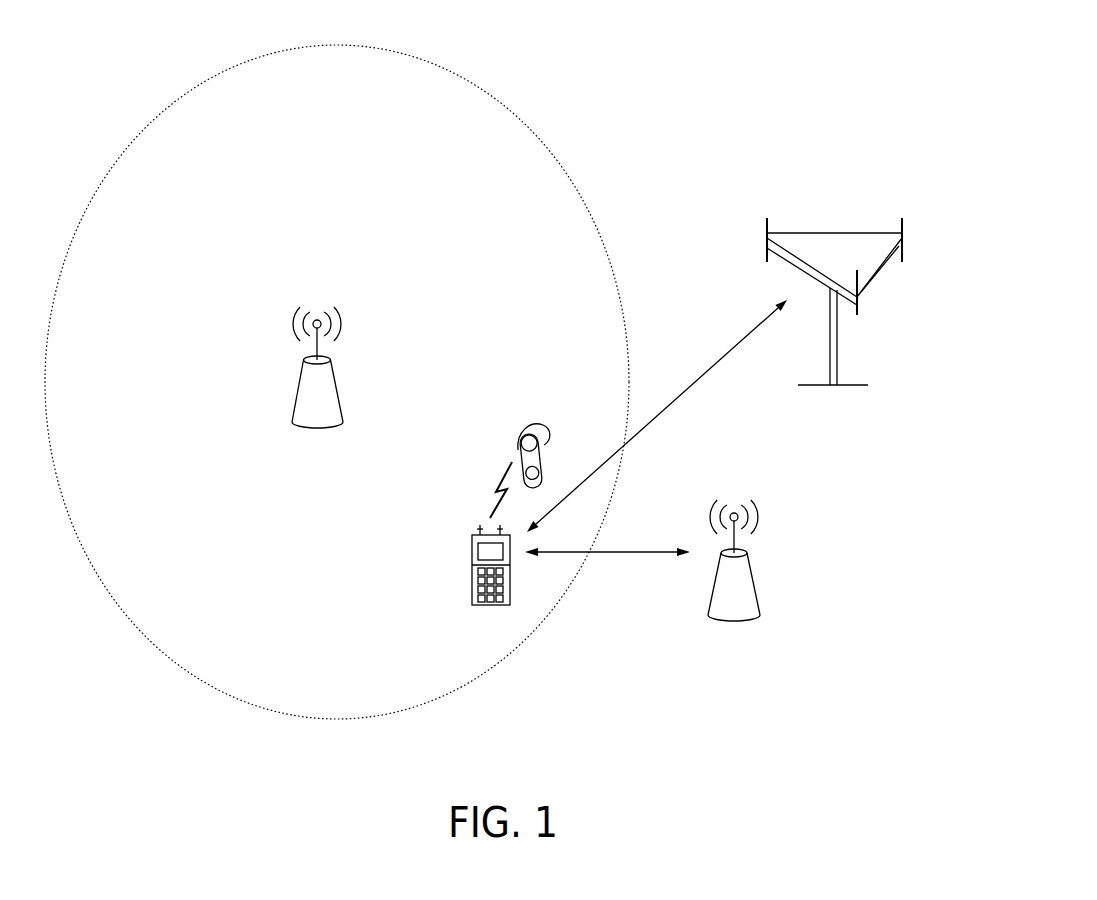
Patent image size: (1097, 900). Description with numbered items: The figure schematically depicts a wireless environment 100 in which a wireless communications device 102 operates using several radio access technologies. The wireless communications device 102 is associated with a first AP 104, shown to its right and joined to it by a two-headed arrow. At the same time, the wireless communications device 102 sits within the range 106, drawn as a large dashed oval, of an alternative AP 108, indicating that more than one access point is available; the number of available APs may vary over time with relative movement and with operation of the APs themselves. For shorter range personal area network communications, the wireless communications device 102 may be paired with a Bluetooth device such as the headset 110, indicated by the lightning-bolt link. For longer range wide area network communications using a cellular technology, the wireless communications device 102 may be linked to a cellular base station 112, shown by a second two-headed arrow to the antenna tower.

The wireless environment 100 is at (698, 83).
The wireless communications device 102 is at (472, 565).
The first AP 104 is at (752, 578).
The range 106 is at (560, 160).
The alternative AP 108 is at (335, 383).
The headset 110 is at (525, 425).
The cellular base station 112 is at (838, 233).